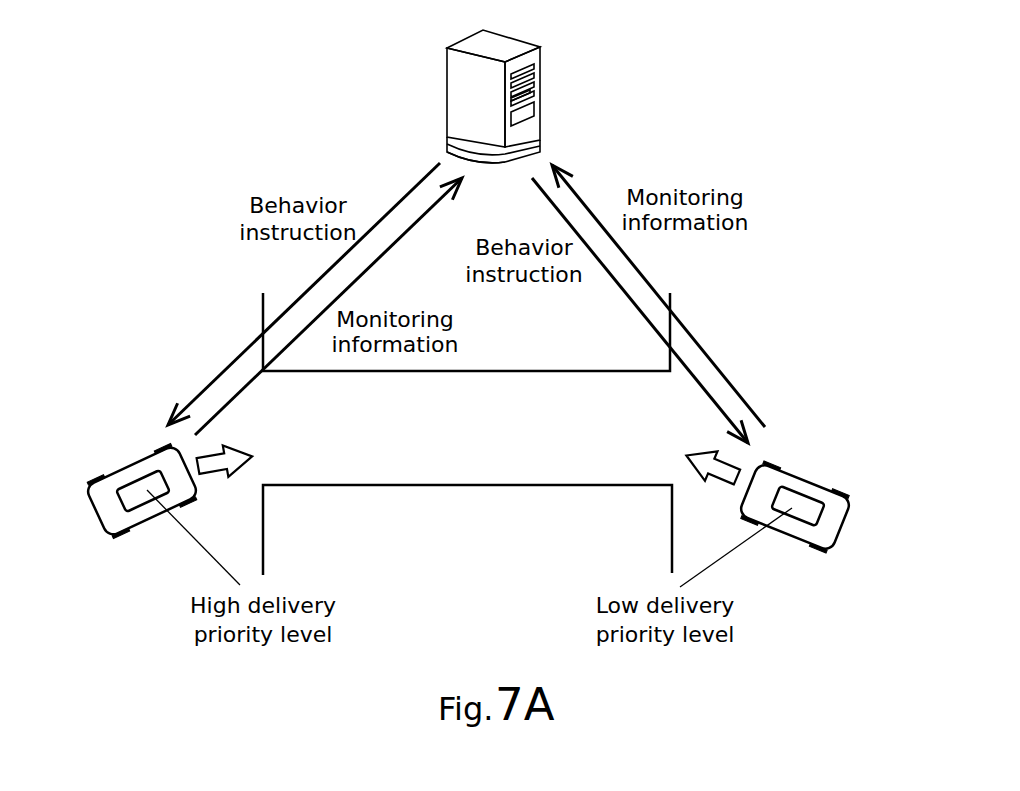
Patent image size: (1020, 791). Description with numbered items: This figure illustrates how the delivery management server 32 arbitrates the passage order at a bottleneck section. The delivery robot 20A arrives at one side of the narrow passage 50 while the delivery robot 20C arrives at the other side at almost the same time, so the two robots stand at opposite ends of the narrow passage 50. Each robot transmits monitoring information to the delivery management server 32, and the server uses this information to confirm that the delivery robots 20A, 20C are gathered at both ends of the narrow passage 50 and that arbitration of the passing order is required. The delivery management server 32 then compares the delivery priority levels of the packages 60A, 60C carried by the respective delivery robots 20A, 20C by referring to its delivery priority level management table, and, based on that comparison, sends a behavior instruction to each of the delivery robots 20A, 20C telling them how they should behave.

The delivery management server 32 is at (447, 95).
The delivery robot 20A is at (806, 513).
The delivery robot 20C is at (136, 495).
The package 60A is at (798, 533).
The package 60C is at (138, 522).
The narrow passage 50 is at (457, 458).